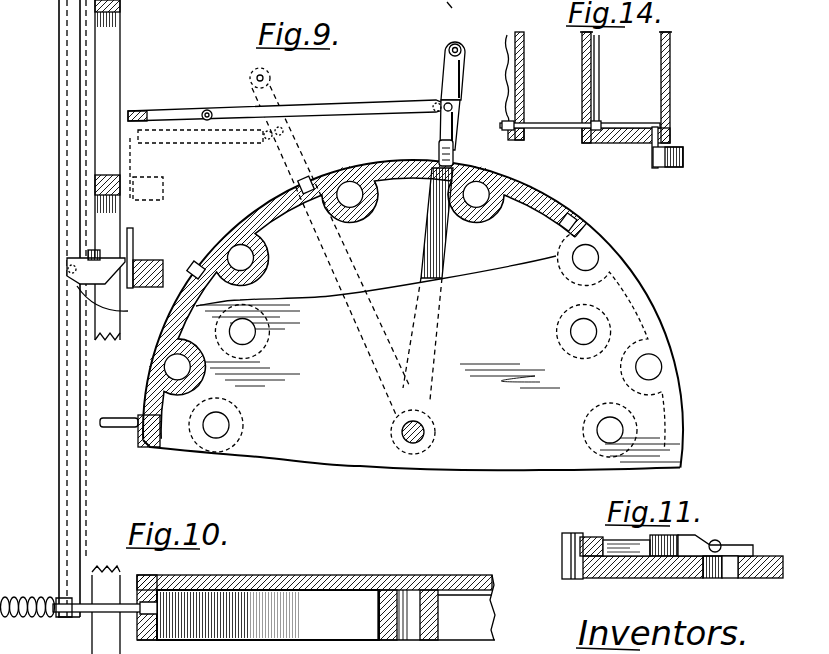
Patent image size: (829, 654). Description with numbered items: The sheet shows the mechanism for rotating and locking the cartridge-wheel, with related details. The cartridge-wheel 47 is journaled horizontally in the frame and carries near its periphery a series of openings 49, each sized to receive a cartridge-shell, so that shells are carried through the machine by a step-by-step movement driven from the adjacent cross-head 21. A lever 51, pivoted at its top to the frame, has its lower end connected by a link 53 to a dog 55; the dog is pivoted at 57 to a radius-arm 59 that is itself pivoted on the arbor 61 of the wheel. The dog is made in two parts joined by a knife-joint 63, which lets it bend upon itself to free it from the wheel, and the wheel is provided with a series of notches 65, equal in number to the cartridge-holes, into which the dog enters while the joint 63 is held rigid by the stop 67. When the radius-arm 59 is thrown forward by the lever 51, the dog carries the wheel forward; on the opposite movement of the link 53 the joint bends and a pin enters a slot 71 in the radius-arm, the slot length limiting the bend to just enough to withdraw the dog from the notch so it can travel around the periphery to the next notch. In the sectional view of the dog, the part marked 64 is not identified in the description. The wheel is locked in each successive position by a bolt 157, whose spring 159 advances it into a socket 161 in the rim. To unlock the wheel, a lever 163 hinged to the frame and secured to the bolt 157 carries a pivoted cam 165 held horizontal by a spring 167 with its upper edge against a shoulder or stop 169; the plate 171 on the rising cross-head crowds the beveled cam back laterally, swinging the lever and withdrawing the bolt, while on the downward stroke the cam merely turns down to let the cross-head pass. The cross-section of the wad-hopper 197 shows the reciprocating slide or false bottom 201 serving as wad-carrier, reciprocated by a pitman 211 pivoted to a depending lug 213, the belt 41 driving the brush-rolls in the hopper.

In FIG. 9, the cross-head 21 is at (157, 262).
In FIG. 9, the belt 41 is at (444, 7).
In FIG. 9, the cartridge-wheel 47 is at (635, 297).
In FIG. 10, the cartridge-wheel 47 is at (283, 575).
In FIG. 9, the openings 49 is at (233, 248).
In FIG. 9, the lever 51 is at (207, 110).
In FIG. 9, the link 53 is at (315, 108).
In FIG. 9, the dog 55 is at (445, 78).
In FIG. 11, the dog 55 is at (720, 544).
In FIG. 9, the pivot 57 is at (463, 48).
In FIG. 9, the radius-arm 59 is at (455, 162).
In FIG. 11, the radius-arm 59 is at (632, 576).
In FIG. 9, the arbor 61 is at (423, 427).
In FIG. 9, the knife-joint 63 is at (458, 107).
In FIG. 11, the knurled pin 64 is at (710, 574).
In FIG. 9, the notches 65 is at (310, 180).
In FIG. 9, the stop 67 is at (456, 122).
In FIG. 9, the slot 71 is at (438, 156).
In FIG. 11, the slot 71 is at (727, 574).
In FIG. 9, the catch or bolt 157 is at (107, 417).
In FIG. 10, the catch or bolt 157 is at (97, 617).
In FIG. 10, the spring 159 is at (22, 600).
In FIG. 9, the socket 161 is at (133, 428).
In FIG. 10, the socket 161 is at (147, 640).
In FIG. 9, the lever 163 is at (63, 373).
In FIG. 9, the pivoted cam 165 is at (88, 268).
In FIG. 9, the spring 167 is at (121, 305).
In FIG. 9, the shoulder or stop 169 is at (88, 253).
In FIG. 9, the plate 171 is at (133, 256).
In FIG. 14, the wad-hopper 197 is at (523, 80).
In FIG. 14, the reciprocating slide or false bottom 201 is at (520, 114).
In FIG. 14, the pitman 211 is at (667, 152).
In FIG. 14, the depending lug 213 is at (653, 157).